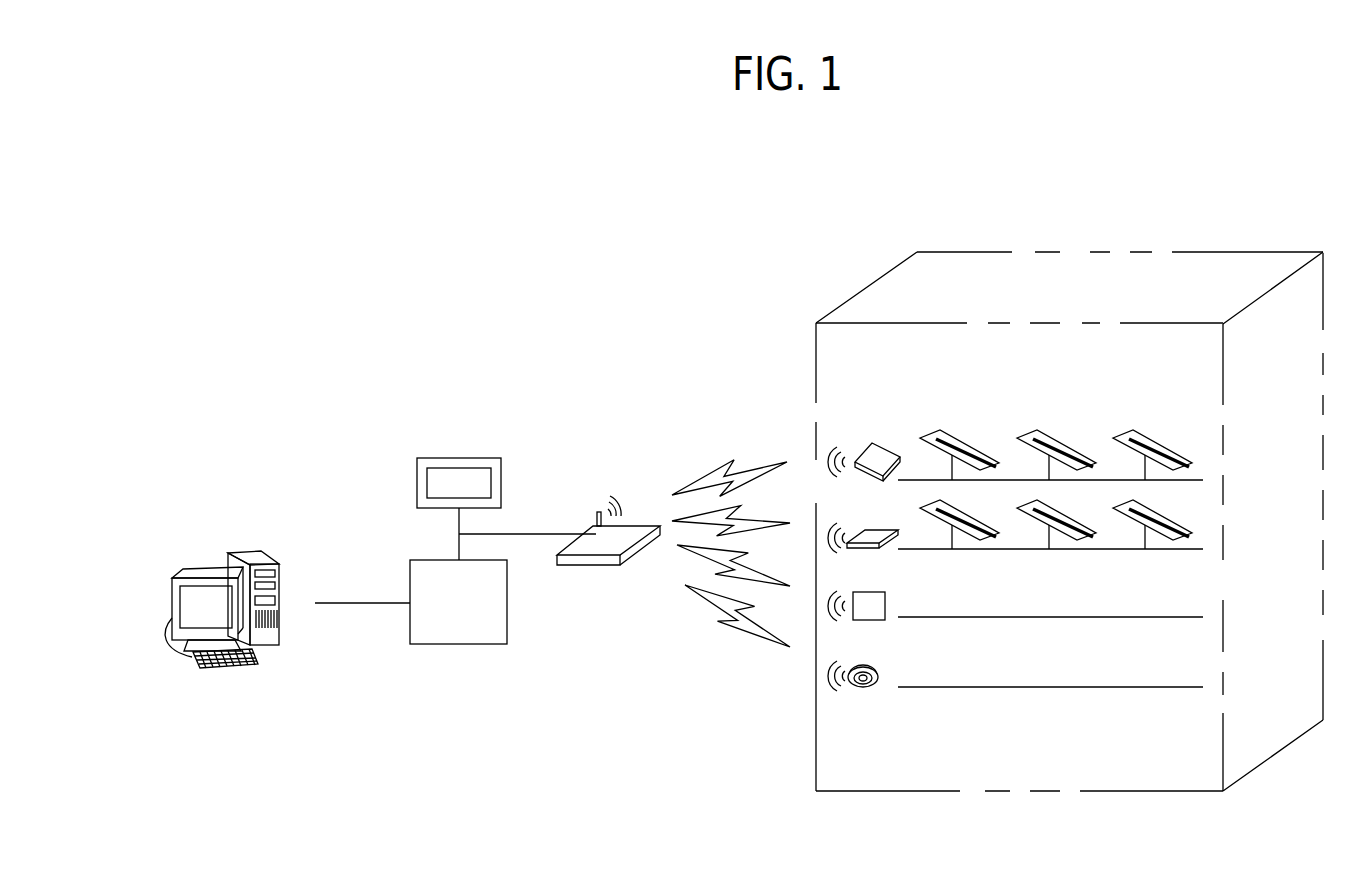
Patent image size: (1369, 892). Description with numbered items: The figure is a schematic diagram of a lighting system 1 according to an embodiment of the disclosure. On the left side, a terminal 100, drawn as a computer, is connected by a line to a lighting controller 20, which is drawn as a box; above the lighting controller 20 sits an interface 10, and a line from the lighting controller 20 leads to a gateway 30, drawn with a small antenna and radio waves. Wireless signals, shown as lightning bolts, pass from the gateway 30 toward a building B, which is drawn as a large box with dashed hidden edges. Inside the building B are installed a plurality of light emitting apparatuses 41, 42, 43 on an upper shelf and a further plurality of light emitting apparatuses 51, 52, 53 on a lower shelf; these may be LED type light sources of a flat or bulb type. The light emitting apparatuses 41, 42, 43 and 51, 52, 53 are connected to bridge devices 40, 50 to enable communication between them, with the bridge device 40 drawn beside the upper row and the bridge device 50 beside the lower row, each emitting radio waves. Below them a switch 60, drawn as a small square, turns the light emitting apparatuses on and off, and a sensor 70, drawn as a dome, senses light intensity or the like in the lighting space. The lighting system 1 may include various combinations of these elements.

The lighting system 1 is at (272, 384).
The interface 10 is at (458, 466).
The lighting controller 20 is at (458, 645).
The gateway 30 is at (604, 566).
The bridge device 40 is at (878, 443).
The light emitting apparatus 41 is at (948, 430).
The light emitting apparatus 42 is at (1044, 430).
The light emitting apparatus 43 is at (1140, 430).
The bridge device 50 is at (880, 549).
The light emitting apparatus 51 is at (975, 531).
The light emitting apparatus 52 is at (1073, 531).
The light emitting apparatus 53 is at (1168, 531).
The switch 60 is at (878, 621).
The sensor 70 is at (863, 688).
The terminal 100 is at (203, 576).
The building B is at (1010, 252).